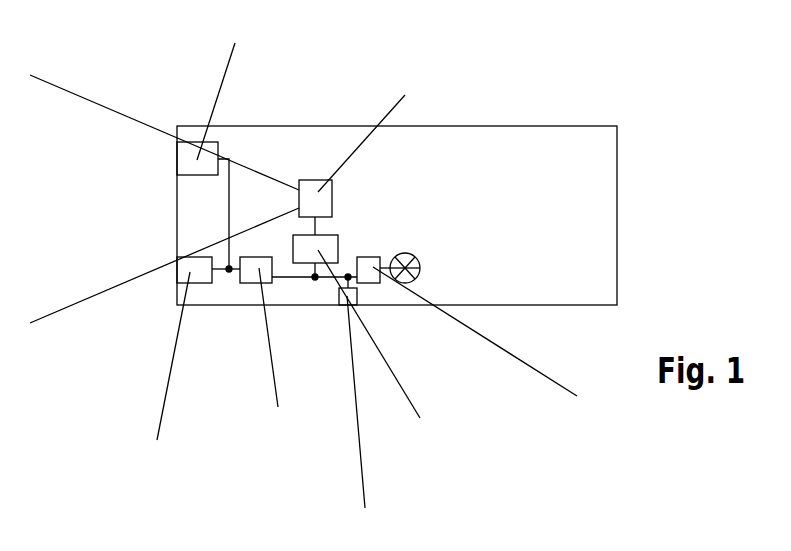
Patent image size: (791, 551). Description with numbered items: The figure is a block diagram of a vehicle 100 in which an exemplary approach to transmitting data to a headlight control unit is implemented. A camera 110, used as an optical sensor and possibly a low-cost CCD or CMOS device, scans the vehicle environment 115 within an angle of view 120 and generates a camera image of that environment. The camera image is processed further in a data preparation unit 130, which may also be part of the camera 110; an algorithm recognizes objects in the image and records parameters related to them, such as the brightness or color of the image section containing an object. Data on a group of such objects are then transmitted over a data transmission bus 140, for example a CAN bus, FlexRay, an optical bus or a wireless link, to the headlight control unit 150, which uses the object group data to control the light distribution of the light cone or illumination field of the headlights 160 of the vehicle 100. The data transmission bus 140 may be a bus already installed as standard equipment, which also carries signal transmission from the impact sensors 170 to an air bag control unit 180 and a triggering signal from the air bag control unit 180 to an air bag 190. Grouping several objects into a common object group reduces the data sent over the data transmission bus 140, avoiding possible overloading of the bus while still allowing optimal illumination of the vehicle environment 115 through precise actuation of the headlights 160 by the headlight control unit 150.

The vehicle 100 is at (617, 213).
The camera 110 is at (332, 197).
The vehicle environment 115 is at (151, 292).
The angle of view 120 is at (75, 292).
The data preparation unit 130 is at (338, 247).
The data transmission bus 140 is at (293, 278).
The headlight control unit 150 is at (260, 278).
The headlights 160 is at (213, 143).
The impact sensors 170 is at (352, 300).
The air bag control unit 180 is at (365, 287).
The air bag 190 is at (410, 290).